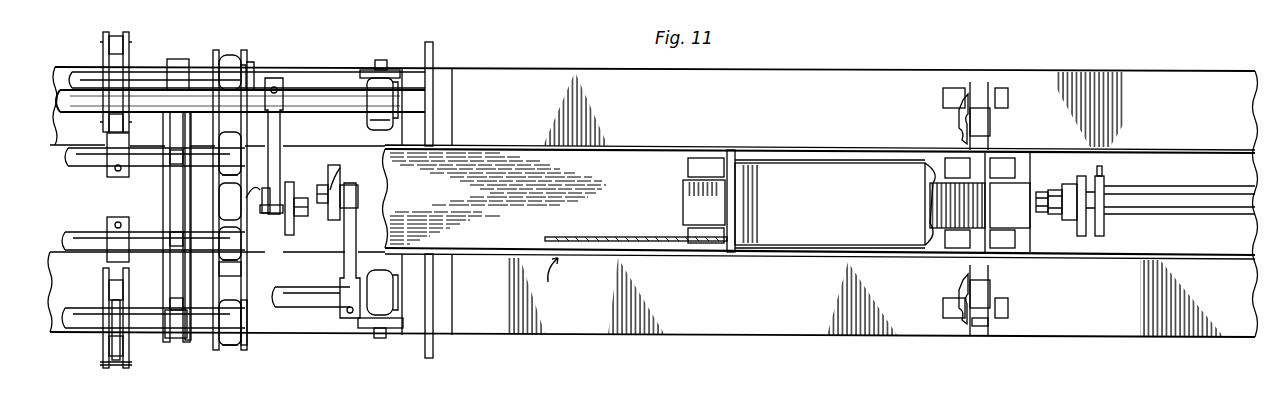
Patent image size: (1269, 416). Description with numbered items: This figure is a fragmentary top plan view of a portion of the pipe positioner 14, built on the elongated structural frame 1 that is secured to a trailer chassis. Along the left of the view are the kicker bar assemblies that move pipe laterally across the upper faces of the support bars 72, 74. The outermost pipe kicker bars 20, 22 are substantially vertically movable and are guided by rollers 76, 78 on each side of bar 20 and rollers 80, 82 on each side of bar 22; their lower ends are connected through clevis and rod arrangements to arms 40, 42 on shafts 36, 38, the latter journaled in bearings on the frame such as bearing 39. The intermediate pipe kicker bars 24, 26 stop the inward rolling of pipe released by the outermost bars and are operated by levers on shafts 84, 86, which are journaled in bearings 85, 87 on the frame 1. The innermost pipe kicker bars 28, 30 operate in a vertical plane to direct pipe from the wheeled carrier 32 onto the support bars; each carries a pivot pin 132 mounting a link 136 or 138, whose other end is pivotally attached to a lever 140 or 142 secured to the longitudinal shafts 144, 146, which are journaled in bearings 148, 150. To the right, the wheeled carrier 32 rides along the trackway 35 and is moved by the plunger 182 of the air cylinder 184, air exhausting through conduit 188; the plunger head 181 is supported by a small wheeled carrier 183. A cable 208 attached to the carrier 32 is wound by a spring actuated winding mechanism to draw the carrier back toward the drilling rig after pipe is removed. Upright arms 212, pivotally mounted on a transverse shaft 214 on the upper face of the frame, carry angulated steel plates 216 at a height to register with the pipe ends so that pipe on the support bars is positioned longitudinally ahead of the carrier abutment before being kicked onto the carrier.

The elongated structural frame 1 is at (878, 63).
The pipe positioner 14 is at (559, 271).
The outermost pipe kicker bar 20 is at (118, 80).
The outermost pipe kicker bar 22 is at (124, 328).
The intermediate pipe kicker bar 24 is at (229, 68).
The intermediate pipe kicker bar 26 is at (195, 330).
The innermost pipe kicker bar 28 is at (326, 224).
The innermost pipe kicker bar 30 is at (292, 186).
The wheeled carrier 32 is at (840, 183).
The trackway 35 is at (594, 186).
The shaft 36 is at (80, 160).
The shaft 38 is at (75, 246).
The bearing 39 is at (241, 270).
The arm 40 is at (121, 170).
The arm 42 is at (122, 248).
The support bar 72 is at (424, 52).
The support bar 74 is at (434, 332).
The roller 76 is at (116, 40).
The roller 78 is at (165, 70).
The roller 80 is at (114, 365).
The roller 82 is at (120, 292).
The shaft 84 is at (78, 74).
The bearing 85 is at (244, 72).
The shaft 86 is at (76, 325).
The bearing 87 is at (245, 335).
The pivot pin 132 is at (356, 210).
The link 136 is at (250, 219).
The link 138 is at (343, 200).
The lever 140 is at (345, 262).
The lever 142 is at (282, 112).
The longitudinal shaft 144 is at (318, 304).
The longitudinal shaft 146 is at (250, 90).
The bearing 148 is at (385, 295).
The bearing 150 is at (385, 100).
The head 181 is at (1072, 190).
The plunger 182 is at (1052, 190).
The wheeled carrier 183 is at (1042, 212).
The air cylinder 184 is at (1172, 188).
The conduit 188 is at (1101, 170).
The cable 208 is at (626, 236).
The upright arm 212 is at (985, 120).
The transverse shaft 214 is at (980, 326).
The angulated steel plate 216 is at (970, 106).